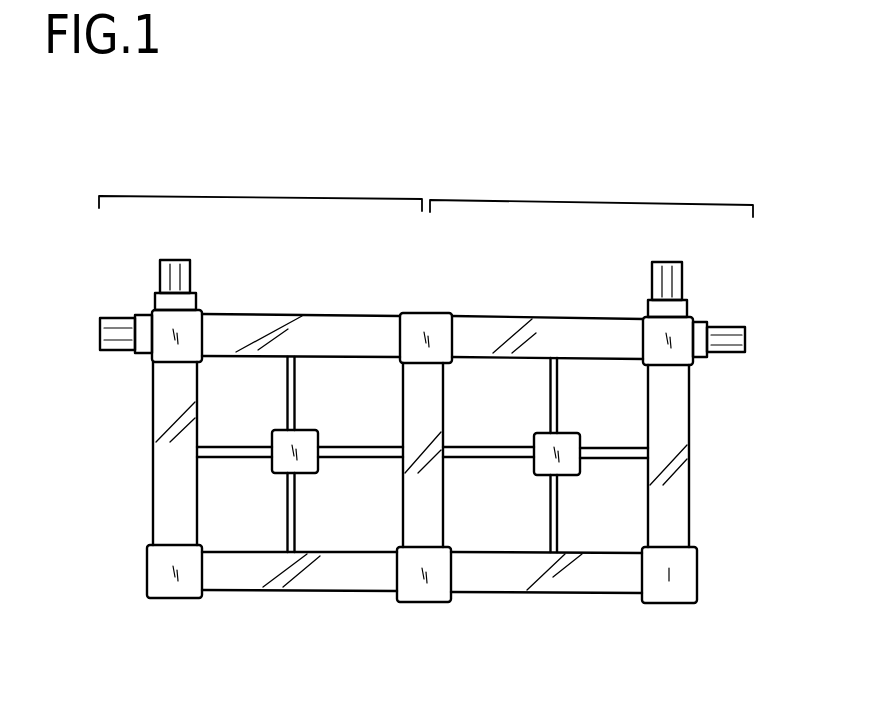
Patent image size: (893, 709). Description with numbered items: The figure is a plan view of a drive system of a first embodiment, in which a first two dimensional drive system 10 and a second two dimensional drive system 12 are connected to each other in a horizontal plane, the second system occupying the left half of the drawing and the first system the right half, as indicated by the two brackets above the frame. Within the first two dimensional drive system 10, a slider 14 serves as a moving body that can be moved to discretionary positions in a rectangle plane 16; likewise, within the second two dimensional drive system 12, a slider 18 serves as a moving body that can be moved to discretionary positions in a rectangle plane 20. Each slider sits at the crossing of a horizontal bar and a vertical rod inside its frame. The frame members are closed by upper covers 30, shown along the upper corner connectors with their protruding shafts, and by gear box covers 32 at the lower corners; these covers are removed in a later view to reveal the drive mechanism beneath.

The first two dimensional drive system 10 is at (595, 195).
The second two dimensional drive system 12 is at (276, 192).
The slider 14 is at (576, 475).
The rectangle plane 16 is at (617, 414).
The slider 18 is at (272, 434).
The rectangle plane 20 is at (252, 518).
The upper cover 30 is at (163, 487).
The gear box cover 32 is at (157, 583).